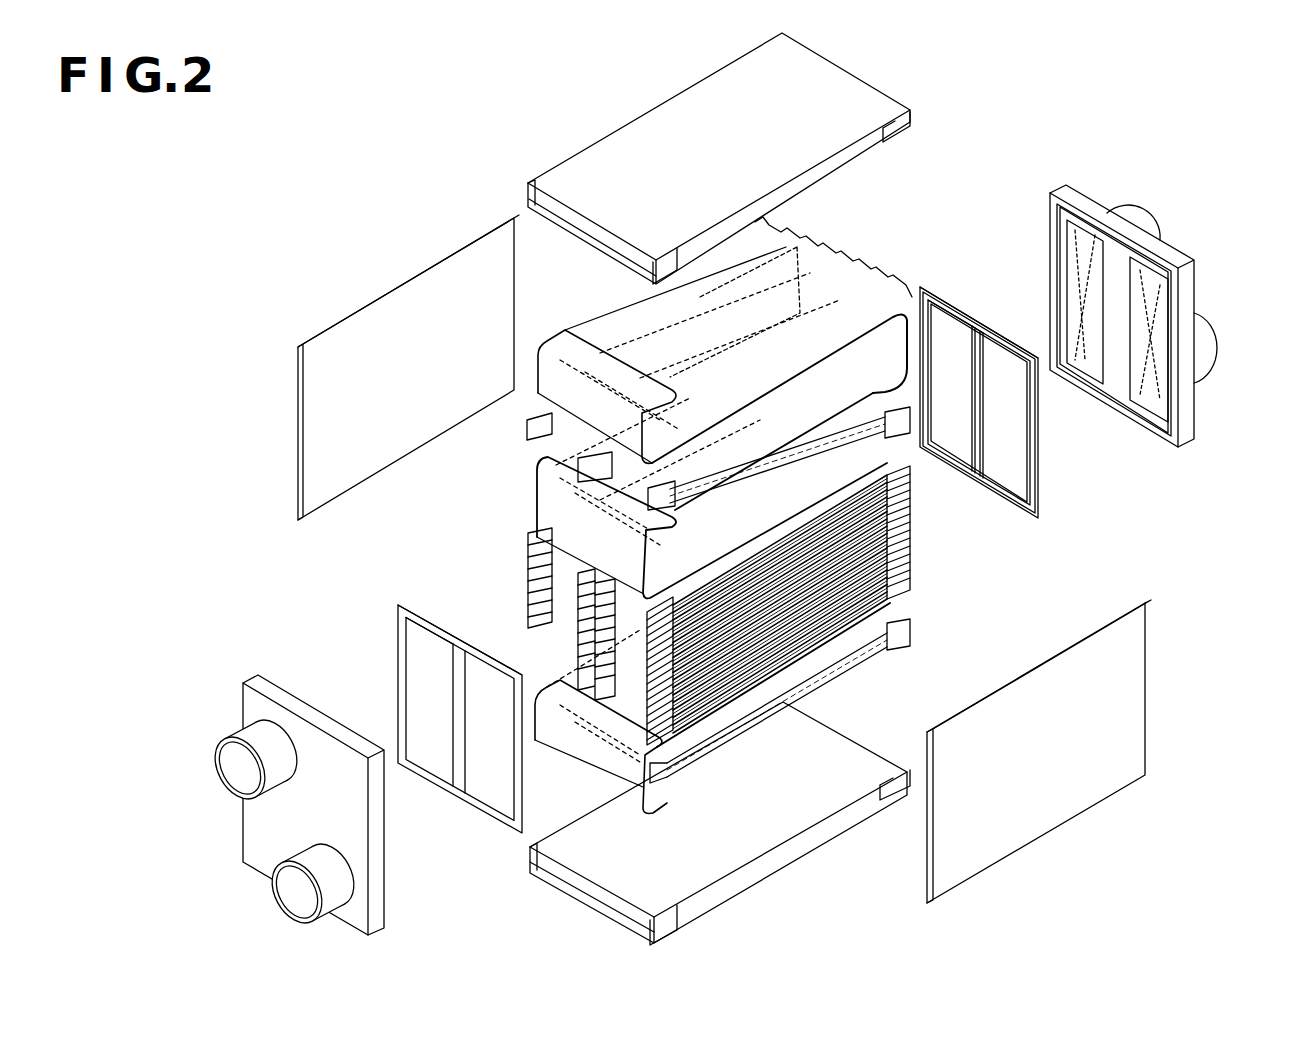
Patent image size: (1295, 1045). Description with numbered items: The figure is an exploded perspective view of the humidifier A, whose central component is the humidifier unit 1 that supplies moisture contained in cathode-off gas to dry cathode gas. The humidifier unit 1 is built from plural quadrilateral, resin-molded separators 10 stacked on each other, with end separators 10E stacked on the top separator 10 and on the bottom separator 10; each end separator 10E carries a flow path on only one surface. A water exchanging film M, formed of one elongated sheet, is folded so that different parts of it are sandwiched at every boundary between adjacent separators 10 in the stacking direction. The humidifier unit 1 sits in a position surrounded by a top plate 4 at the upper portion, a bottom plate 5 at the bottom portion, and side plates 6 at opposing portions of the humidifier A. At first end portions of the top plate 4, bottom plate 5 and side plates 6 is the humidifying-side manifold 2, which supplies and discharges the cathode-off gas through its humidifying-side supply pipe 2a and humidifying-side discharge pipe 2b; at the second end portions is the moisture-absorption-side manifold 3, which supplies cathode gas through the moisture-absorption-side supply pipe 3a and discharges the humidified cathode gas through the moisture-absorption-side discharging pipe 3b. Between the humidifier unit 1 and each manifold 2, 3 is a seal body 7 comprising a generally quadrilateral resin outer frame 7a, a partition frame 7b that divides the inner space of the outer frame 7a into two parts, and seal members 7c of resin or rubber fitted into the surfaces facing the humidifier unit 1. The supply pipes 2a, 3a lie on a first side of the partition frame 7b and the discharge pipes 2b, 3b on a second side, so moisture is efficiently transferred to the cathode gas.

The humidifier A is at (403, 132).
The humidifier unit 1 is at (935, 567).
The humidifying-side manifold 2 is at (248, 706).
The humidifying-side supply pipe 2a is at (297, 890).
The humidifying-side discharge pipe 2b is at (232, 773).
The moisture-absorption-side manifold 3 is at (1190, 410).
The moisture-absorption-side supply pipe 3a is at (1215, 345).
The moisture-absorption-side discharging pipe 3b is at (1150, 212).
The top plate 4 is at (685, 125).
The bottom plate 5 is at (795, 843).
The side plates 6 is at (378, 290).
The seal bodies 7 is at (400, 690).
The outer frame 7a is at (438, 607).
The partition frame 7b is at (475, 705).
The seal members 7c is at (972, 475).
The separators 10 is at (565, 437).
The end separators 10E is at (815, 245).
The water exchanging film M is at (560, 333).